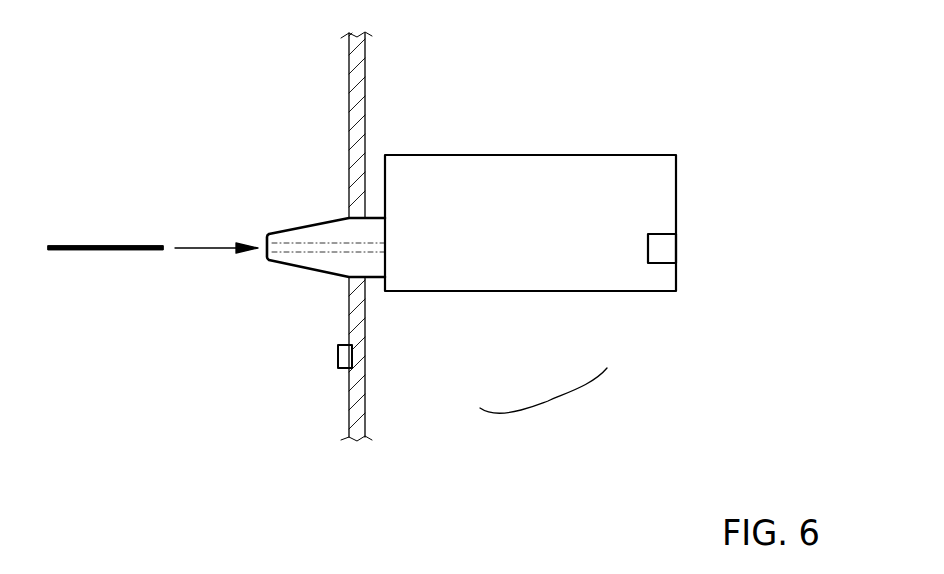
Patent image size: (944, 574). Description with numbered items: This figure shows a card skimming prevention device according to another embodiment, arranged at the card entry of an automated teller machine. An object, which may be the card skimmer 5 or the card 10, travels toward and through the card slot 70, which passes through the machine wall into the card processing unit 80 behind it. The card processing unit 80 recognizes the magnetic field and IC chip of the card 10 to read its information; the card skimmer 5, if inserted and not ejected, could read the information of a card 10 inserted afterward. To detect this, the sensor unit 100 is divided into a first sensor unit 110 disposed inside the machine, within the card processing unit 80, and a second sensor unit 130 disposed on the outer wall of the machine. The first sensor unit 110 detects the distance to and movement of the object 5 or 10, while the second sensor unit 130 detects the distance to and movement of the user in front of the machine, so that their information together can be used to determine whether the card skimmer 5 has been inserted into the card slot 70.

The card skimmer 5 is at (103, 246).
The card 10 is at (105, 248).
The card slot 70 is at (290, 276).
The card processing unit 80 is at (523, 155).
The sensor unit 100 is at (543, 401).
The first sensor unit 110 is at (663, 258).
The second sensor unit 130 is at (352, 353).